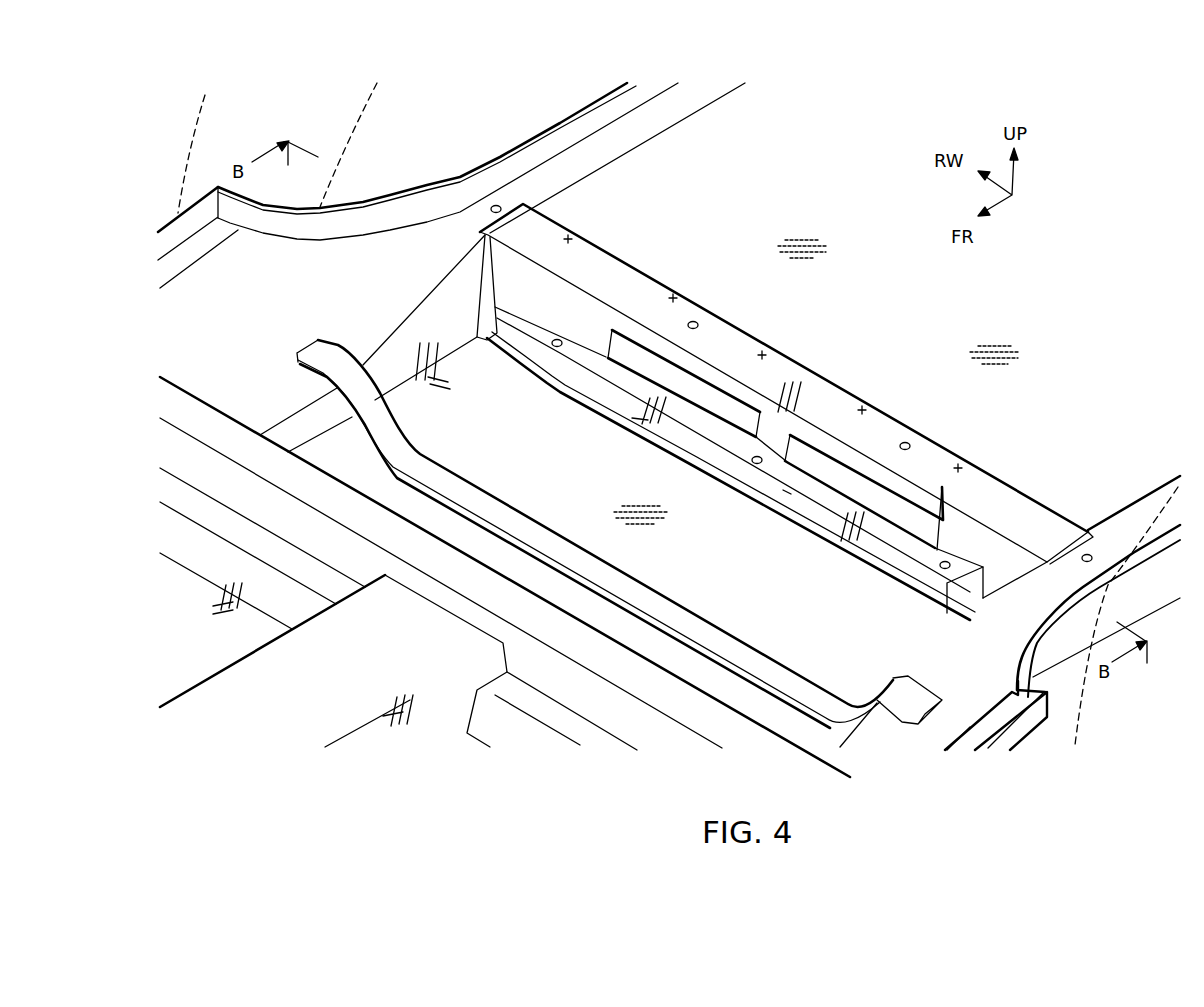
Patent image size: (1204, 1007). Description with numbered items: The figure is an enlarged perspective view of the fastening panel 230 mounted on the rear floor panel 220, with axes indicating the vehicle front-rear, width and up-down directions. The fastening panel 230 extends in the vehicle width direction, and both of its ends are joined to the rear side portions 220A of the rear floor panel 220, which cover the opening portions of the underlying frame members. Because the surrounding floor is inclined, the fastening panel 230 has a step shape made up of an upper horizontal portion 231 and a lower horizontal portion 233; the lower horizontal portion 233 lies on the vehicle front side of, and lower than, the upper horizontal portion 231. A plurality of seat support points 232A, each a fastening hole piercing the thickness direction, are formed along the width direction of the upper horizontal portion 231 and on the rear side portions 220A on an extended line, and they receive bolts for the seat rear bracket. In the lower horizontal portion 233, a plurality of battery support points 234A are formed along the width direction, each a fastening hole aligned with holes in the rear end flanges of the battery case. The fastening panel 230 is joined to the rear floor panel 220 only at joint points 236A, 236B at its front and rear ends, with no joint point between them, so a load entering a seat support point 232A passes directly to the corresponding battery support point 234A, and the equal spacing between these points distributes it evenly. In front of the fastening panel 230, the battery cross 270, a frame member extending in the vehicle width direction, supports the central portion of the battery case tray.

The rear floor panel 220 is at (412, 407).
The rear side portions 220A is at (620, 137).
The fastening panel 230 is at (823, 378).
The upper horizontal portion 231 is at (633, 287).
The seat support point 232A is at (496, 204).
The lower horizontal portion 233 is at (633, 385).
The battery support point 234A is at (552, 341).
The joint point 236A is at (786, 492).
The joint point 236B is at (575, 237).
The battery cross 270 is at (320, 352).